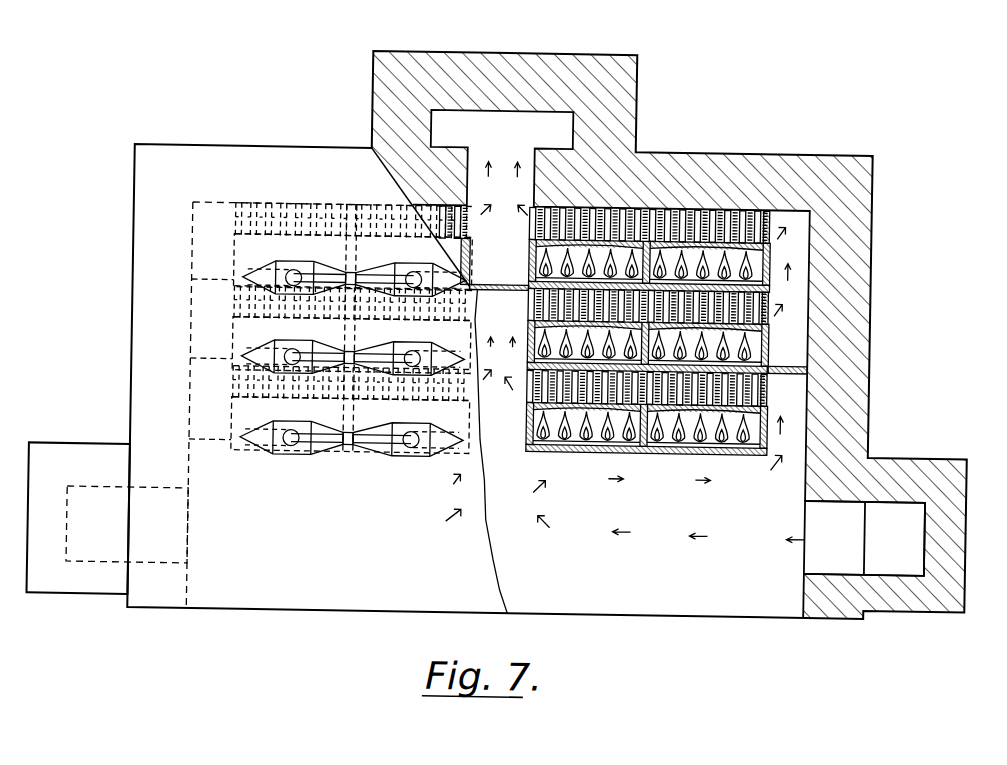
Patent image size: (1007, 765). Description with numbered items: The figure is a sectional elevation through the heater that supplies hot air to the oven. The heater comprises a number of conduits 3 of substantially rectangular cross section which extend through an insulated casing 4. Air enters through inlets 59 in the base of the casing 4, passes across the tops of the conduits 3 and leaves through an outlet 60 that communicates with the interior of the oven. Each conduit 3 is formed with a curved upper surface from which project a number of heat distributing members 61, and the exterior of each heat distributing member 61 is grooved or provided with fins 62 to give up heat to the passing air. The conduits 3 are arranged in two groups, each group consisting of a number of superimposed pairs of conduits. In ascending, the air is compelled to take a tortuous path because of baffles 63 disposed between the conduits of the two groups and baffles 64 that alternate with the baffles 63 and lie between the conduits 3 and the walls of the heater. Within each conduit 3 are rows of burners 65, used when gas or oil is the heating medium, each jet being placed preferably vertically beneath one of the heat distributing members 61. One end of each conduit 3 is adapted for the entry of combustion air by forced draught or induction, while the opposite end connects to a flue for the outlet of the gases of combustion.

The conduit 3 is at (713, 257).
The insulated casing 4 is at (844, 340).
The inlet 59 is at (95, 511).
The outlet 60 is at (526, 124).
The heat distributing member 61 is at (705, 210).
The fins 62 is at (760, 219).
The baffle 63 is at (488, 285).
The baffle 64 is at (800, 370).
The burner 65 is at (619, 208).